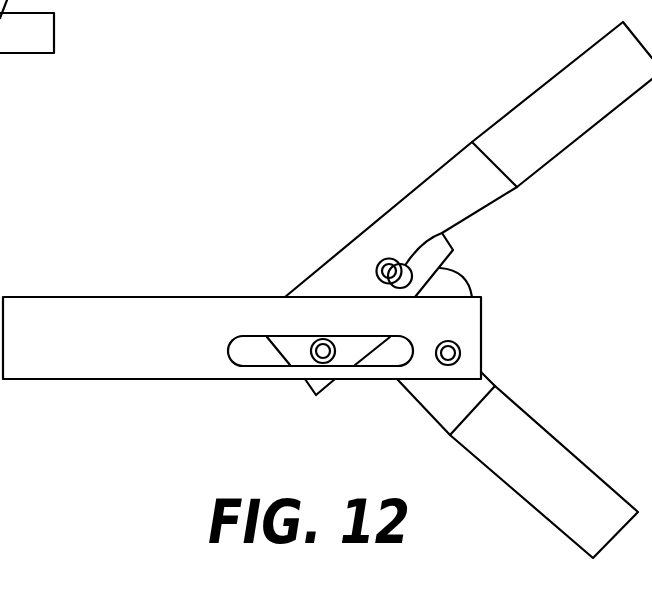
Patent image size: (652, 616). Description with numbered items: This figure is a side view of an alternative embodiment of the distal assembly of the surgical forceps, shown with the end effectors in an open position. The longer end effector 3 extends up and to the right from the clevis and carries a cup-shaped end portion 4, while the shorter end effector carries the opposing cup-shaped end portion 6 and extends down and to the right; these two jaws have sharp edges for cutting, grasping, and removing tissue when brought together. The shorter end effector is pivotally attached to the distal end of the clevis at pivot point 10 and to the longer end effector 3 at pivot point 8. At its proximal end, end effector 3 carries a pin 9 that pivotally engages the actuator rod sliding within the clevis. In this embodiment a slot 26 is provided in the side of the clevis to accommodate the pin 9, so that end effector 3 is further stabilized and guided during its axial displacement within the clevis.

The end effector 3 is at (445, 236).
The end portion 4 is at (538, 115).
The end portion 6 is at (556, 455).
The pivot point 8 is at (388, 268).
The pivot point 9 is at (325, 352).
The pivot point 10 is at (451, 352).
The slot 26 is at (248, 343).